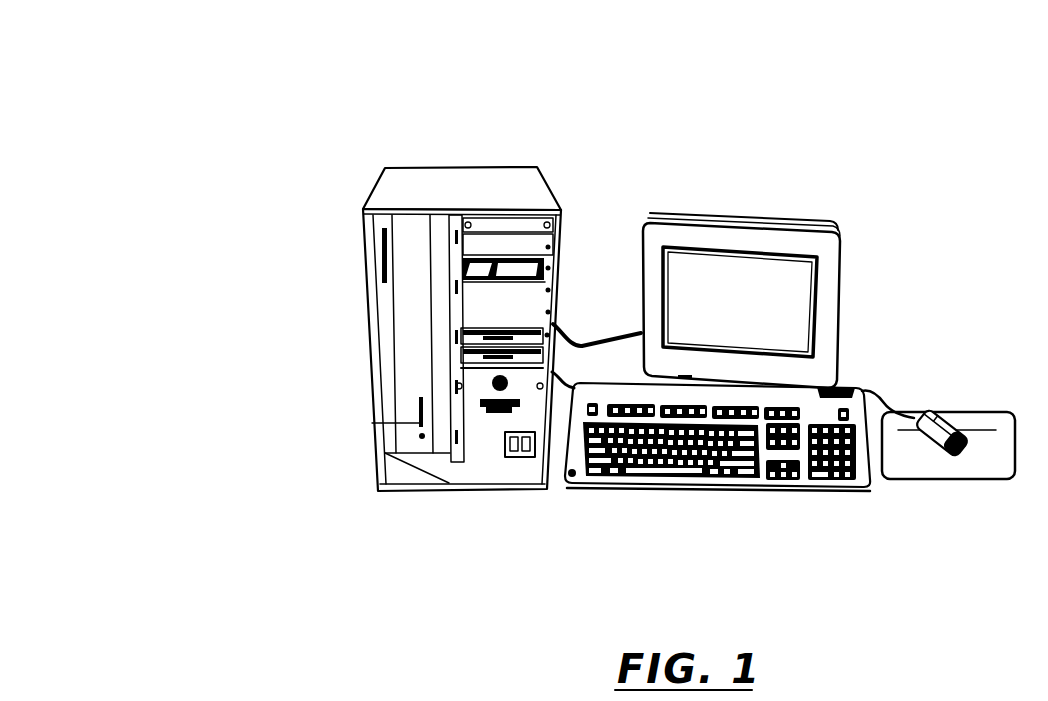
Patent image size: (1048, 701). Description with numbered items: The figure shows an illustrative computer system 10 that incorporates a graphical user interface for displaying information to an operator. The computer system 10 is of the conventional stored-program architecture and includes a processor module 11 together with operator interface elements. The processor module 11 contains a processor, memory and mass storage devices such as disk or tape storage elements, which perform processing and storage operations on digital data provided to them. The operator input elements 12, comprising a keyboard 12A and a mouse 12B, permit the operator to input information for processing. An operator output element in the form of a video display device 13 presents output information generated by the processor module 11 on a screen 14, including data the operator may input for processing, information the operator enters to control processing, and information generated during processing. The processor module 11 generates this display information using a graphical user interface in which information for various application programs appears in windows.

The computer system 10 is at (304, 94).
The processor module 11 is at (471, 166).
The operator input element(s) 12 is at (862, 540).
The keyboard 12A is at (750, 491).
The mouse 12B is at (1003, 483).
The video display device 13 is at (847, 304).
The screen 14 is at (672, 277).